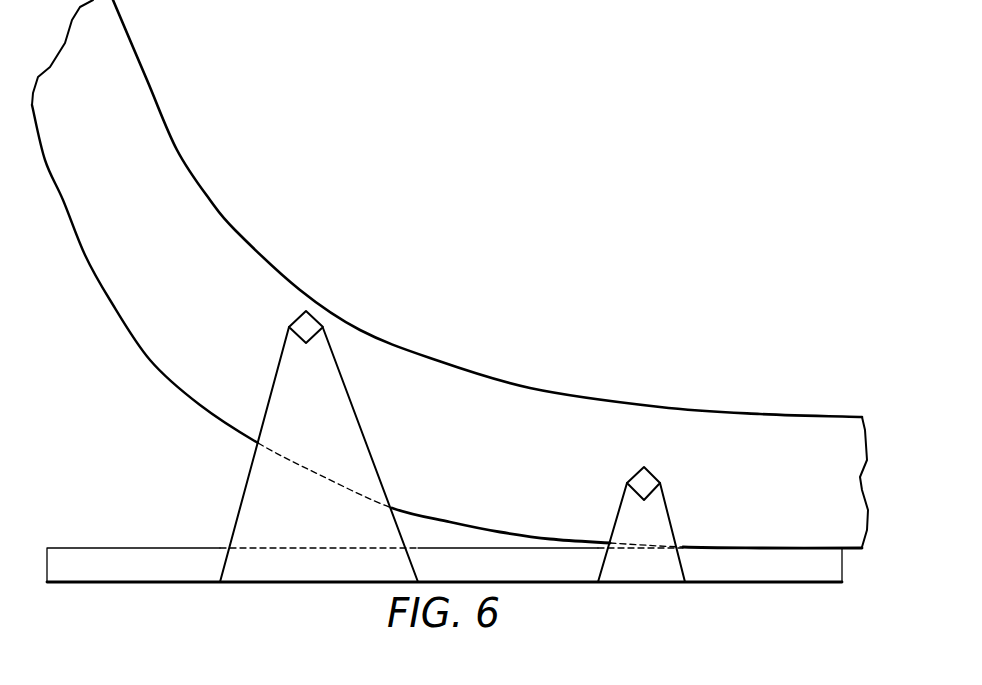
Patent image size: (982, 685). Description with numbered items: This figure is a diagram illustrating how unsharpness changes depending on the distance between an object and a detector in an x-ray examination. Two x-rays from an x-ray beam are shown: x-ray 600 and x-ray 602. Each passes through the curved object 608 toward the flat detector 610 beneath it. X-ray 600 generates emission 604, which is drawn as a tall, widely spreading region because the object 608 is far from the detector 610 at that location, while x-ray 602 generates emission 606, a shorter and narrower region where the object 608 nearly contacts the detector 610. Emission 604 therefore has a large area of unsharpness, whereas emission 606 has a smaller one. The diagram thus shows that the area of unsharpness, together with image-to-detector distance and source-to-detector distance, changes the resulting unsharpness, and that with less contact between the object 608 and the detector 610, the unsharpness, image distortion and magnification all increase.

The x-ray 600 is at (289, 317).
The x-ray 602 is at (631, 467).
The emission 604 is at (242, 497).
The emission 606 is at (672, 514).
The object 608 is at (755, 411).
The detector 610 is at (124, 583).